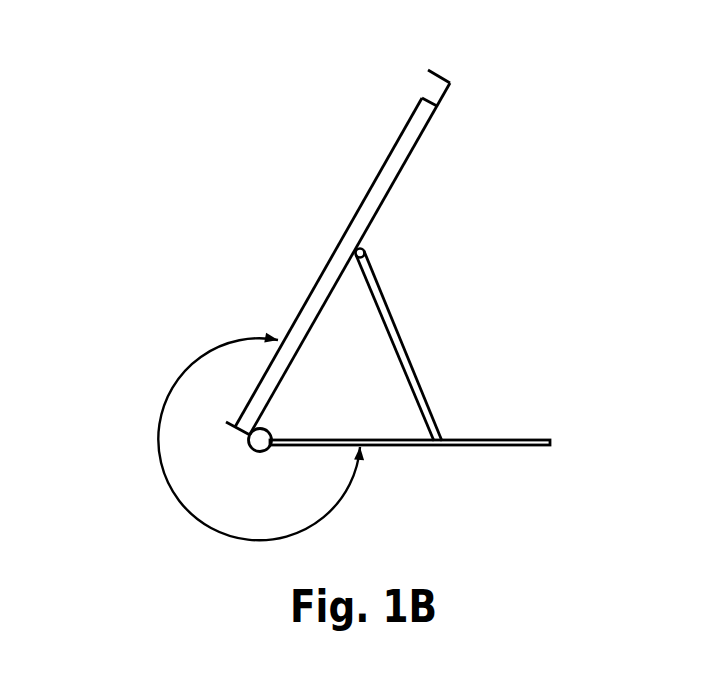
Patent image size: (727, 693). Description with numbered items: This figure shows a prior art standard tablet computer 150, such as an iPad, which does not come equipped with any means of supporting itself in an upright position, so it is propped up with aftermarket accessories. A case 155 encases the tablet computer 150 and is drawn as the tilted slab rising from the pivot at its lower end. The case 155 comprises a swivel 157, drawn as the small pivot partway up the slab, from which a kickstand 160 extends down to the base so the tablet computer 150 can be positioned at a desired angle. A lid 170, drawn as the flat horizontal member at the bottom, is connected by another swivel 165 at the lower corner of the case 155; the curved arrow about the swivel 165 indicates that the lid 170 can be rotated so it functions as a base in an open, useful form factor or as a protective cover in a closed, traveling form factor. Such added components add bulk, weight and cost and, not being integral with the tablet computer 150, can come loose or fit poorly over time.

The tablet computer 150 is at (152, 97).
The case 155 is at (440, 78).
The swivel 157 is at (364, 250).
The kickstand 160 is at (408, 358).
The swivel 165 is at (249, 449).
The lid 170 is at (458, 445).